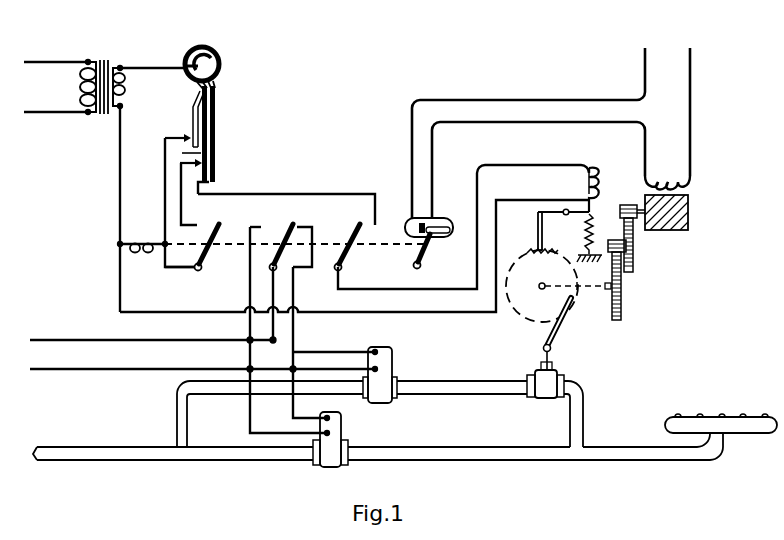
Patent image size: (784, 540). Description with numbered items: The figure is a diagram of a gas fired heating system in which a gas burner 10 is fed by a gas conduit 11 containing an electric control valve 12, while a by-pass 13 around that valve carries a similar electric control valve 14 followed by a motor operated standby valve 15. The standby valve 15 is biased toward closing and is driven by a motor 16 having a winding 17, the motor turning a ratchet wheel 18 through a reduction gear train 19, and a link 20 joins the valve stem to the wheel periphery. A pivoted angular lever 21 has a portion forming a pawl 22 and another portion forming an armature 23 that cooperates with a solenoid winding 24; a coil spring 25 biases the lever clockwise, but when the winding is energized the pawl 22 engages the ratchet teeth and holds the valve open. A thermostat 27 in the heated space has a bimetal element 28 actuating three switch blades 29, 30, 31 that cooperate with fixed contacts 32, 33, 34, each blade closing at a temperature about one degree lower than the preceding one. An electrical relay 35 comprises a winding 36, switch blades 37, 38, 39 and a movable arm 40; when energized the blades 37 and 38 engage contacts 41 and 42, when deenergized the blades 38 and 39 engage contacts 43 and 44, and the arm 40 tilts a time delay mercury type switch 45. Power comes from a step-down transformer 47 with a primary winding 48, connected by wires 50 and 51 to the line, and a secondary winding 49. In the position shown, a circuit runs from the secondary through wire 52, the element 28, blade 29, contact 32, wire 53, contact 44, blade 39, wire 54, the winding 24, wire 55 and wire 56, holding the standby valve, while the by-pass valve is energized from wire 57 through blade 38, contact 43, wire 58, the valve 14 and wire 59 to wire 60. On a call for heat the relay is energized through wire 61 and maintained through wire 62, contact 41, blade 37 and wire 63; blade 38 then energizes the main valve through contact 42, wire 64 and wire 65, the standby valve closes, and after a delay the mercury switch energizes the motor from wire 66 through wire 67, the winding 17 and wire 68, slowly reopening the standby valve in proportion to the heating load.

The gas burner 10 is at (693, 417).
The gas conduit 11 is at (441, 446).
The electric control valve 12 is at (343, 425).
The by-pass 13 is at (452, 380).
The electric control valve 14 is at (393, 356).
The motor operated standby valve 15 is at (553, 374).
The motor 16 is at (692, 210).
The motor winding 17 is at (658, 168).
The ratchet wheel 18 is at (520, 259).
The reduction gear train 19 is at (638, 270).
The link 20 is at (562, 326).
The pivoted angular lever 21 is at (571, 219).
The pawl 22 is at (537, 231).
The armature 23 is at (584, 174).
The solenoid winding 24 is at (598, 179).
The coil spring 25 is at (594, 235).
The thermostat 27 is at (211, 108).
The bimetal element 28 is at (222, 68).
The switch blade 29 is at (218, 137).
The switch blade 30 is at (183, 153).
The switch blade 31 is at (192, 118).
The fixed electrical contact 32 is at (212, 183).
The fixed electrical contact 33 is at (191, 169).
The fixed electrical contact 34 is at (180, 137).
The electrical relay 35 is at (257, 239).
The winding 36 is at (140, 240).
The switch blade 37 is at (208, 258).
The switch blade 38 is at (281, 254).
The switch blade 39 is at (349, 254).
The movable arm 40 is at (428, 251).
The fixed electrical contact 41 is at (198, 229).
The fixed electrical contact 42 is at (262, 230).
The fixed electrical contact 43 is at (297, 228).
The fixed electrical contact 44 is at (370, 224).
The time delay mercury type switch 45 is at (443, 220).
The step-down transformer 47 is at (89, 77).
The primary winding 48 is at (80, 88).
The secondary winding 49 is at (126, 80).
The wire 50 is at (40, 61).
The wire 51 is at (48, 114).
The wire 52 is at (165, 66).
The wire 53 is at (302, 194).
The wire 54 is at (414, 289).
The wire 55 is at (381, 312).
The wire 56 is at (119, 209).
The wire 57 is at (140, 339).
The wire 58 is at (294, 333).
The wire 59 is at (321, 372).
The wire 60 is at (158, 368).
The wire 61 is at (164, 165).
The wire 62 is at (182, 222).
The wire 63 is at (176, 268).
The wire 64 is at (249, 295).
The wire 65 is at (292, 407).
The wire 66 is at (560, 99).
The wire 67 is at (557, 123).
The wire 68 is at (689, 99).